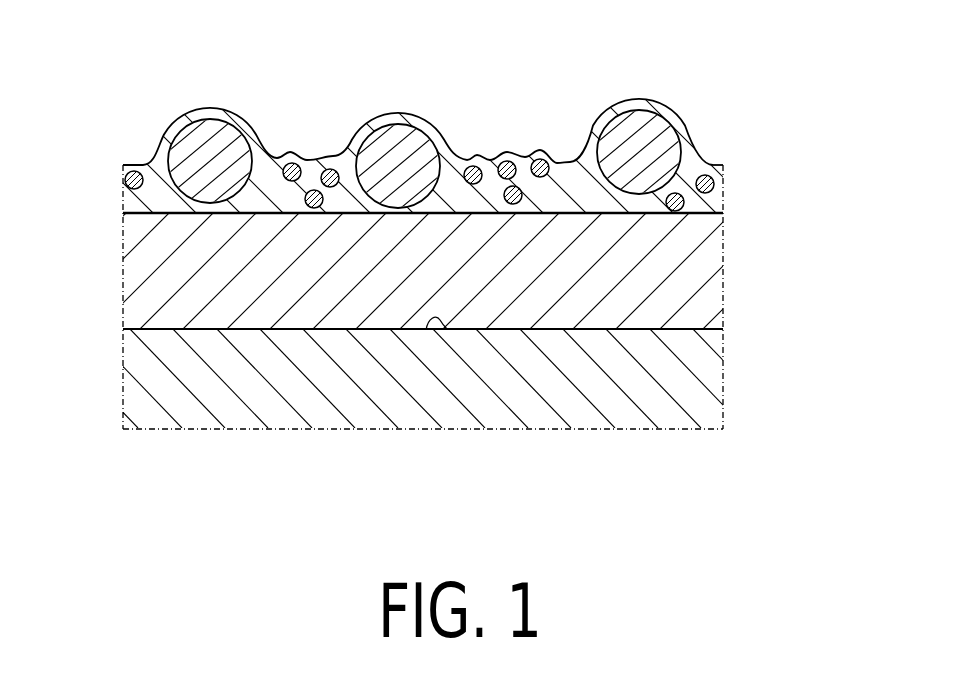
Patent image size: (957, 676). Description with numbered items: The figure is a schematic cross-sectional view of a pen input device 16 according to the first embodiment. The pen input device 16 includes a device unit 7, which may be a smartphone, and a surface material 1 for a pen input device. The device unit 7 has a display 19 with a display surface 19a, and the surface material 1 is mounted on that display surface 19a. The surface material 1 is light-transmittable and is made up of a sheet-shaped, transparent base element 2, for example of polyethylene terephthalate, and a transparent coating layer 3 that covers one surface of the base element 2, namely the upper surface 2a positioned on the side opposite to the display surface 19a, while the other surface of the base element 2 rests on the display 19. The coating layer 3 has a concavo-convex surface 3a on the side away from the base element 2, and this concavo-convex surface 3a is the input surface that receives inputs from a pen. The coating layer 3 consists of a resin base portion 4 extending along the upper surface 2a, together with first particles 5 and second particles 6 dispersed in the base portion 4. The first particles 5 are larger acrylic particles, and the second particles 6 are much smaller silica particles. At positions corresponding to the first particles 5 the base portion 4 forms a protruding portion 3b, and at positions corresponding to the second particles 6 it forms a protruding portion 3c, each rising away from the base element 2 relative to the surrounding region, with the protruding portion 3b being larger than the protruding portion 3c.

The surface material 1 is at (428, 180).
The base element 2 is at (414, 270).
The upper surface 2a is at (122, 212).
The coating layer 3 is at (438, 142).
The concavo-convex surface 3a is at (716, 162).
The protruding portion 3b is at (396, 118).
The protruding portion 3c is at (476, 152).
The base portion 4 is at (125, 188).
The first particles 5 is at (203, 150).
The second particles 6 is at (291, 162).
The device unit 7 is at (394, 379).
The pen input device 16 is at (436, 281).
The display 19 is at (703, 367).
The display surface 19a is at (426, 330).